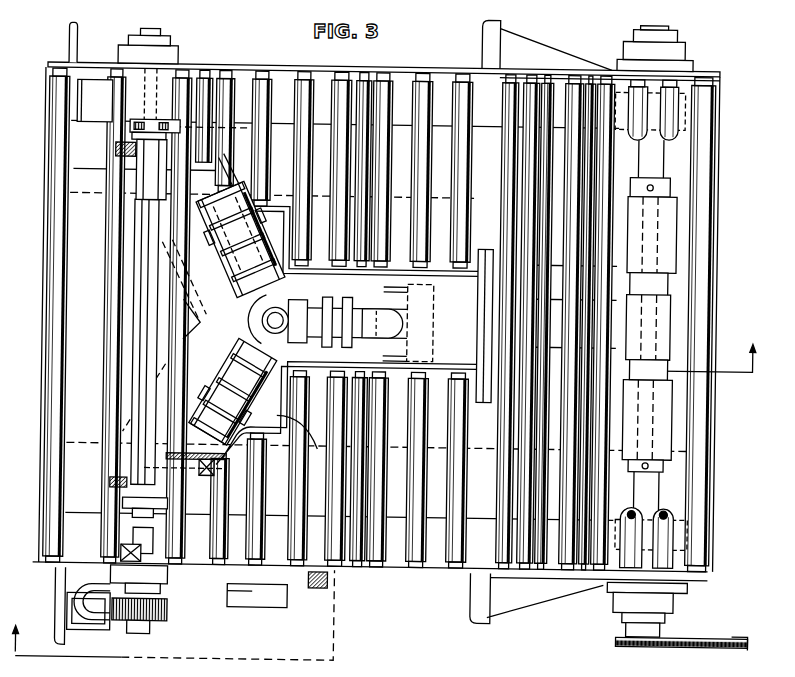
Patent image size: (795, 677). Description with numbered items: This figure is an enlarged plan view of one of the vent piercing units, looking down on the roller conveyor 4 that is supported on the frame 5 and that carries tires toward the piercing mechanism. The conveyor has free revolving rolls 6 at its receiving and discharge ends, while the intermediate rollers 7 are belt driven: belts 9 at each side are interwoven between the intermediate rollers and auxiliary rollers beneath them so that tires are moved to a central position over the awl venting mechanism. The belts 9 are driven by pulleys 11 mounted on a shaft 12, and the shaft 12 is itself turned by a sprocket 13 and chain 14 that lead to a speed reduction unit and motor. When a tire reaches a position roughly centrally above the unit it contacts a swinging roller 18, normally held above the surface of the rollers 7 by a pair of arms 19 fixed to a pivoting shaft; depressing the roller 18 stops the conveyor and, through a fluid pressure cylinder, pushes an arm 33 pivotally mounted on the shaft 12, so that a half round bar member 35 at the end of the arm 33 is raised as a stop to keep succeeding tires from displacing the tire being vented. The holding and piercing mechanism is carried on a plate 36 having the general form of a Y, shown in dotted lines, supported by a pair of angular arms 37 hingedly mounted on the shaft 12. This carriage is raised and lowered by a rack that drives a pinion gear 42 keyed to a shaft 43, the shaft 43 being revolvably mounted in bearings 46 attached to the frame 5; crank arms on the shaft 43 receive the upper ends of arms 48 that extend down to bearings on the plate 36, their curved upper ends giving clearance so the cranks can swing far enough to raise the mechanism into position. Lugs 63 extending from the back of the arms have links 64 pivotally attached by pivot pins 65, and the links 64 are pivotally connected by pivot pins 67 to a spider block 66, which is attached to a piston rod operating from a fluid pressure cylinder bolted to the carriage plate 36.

The frame 5 is at (69, 36).
The free revolving rolls 6 is at (57, 411).
The intermediate rollers 7 is at (454, 548).
The belts 9 is at (447, 92).
The pulleys 11 is at (705, 85).
The shaft 12 is at (671, 21).
The sprocket 13 is at (639, 636).
The chain 14 is at (739, 635).
The swinging roller 18 is at (142, 330).
The arms 19 is at (139, 126).
The arm 33 is at (669, 313).
The half round bar member 35 is at (492, 329).
The plate 36 is at (165, 244).
The angular arms 37 is at (626, 236).
The pinion gear 42 is at (178, 611).
The shaft 43 is at (151, 630).
The bearings 46 is at (169, 48).
The arms 48 is at (129, 146).
The lugs 63 is at (233, 277).
The links 64 is at (266, 289).
The pivot pins 65 is at (252, 242).
The spider block 66 is at (262, 318).
The pivot pins 67 is at (253, 314).
The roller conveyor 4 is at (382, 490).